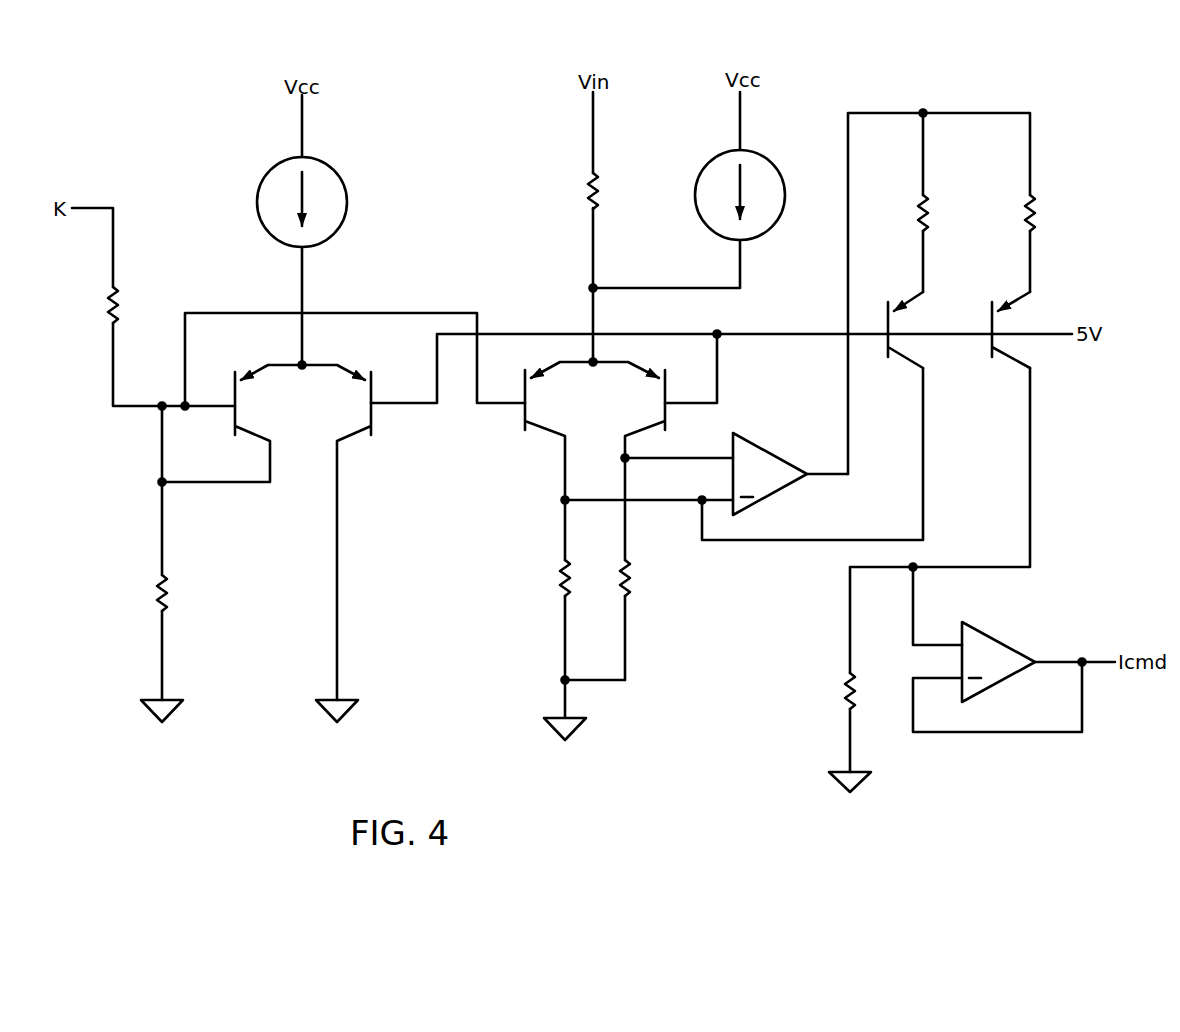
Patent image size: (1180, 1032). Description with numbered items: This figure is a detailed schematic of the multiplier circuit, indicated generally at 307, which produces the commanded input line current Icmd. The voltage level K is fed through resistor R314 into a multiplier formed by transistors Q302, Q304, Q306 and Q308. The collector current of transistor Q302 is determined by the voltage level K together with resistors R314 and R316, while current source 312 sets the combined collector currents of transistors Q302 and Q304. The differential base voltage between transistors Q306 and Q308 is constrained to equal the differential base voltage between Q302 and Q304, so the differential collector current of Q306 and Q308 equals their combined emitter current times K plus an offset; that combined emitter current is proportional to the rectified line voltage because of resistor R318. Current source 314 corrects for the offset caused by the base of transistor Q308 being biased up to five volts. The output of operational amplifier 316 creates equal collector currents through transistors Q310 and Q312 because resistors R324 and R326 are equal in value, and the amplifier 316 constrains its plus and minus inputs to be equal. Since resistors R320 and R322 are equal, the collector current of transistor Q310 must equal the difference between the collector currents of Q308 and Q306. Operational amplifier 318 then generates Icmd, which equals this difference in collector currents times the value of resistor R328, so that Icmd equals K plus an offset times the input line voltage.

The current source 312 is at (336, 185).
The current source 314 is at (770, 170).
The operational amplifier 316 is at (755, 443).
The operational amplifier 318 is at (995, 632).
The current mirror circuit 307 is at (637, 721).
The resistor R314 is at (118, 299).
The resistor R316 is at (167, 594).
The resistor R318 is at (599, 196).
The resistor R320 is at (560, 581).
The resistor R322 is at (630, 581).
The resistor R324 is at (928, 204).
The resistor R326 is at (1035, 204).
The resistor R328 is at (846, 681).
The transistor Q302 is at (240, 403).
The transistor Q304 is at (362, 403).
The transistor Q306 is at (533, 395).
The transistor Q308 is at (653, 400).
The transistor Q310 is at (907, 340).
The transistor Q312 is at (1005, 338).